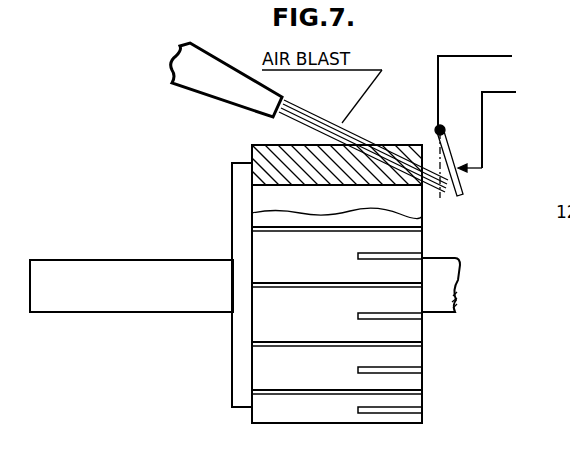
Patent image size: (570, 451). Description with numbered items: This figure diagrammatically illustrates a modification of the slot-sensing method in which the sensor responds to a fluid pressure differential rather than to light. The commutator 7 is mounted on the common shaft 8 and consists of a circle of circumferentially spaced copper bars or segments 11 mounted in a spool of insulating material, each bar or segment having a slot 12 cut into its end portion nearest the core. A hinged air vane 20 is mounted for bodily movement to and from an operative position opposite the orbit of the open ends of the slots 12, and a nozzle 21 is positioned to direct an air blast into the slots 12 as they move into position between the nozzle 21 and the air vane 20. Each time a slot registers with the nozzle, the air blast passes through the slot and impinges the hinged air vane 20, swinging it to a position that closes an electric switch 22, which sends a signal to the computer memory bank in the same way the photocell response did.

The commutator 7 is at (414, 357).
The shaft 8 is at (143, 272).
The copper bars or segments 11 is at (313, 266).
The slot 12 is at (407, 153).
The hinged air vane 20 is at (466, 186).
The nozzle 21 is at (214, 100).
The electric switch 22 is at (458, 158).